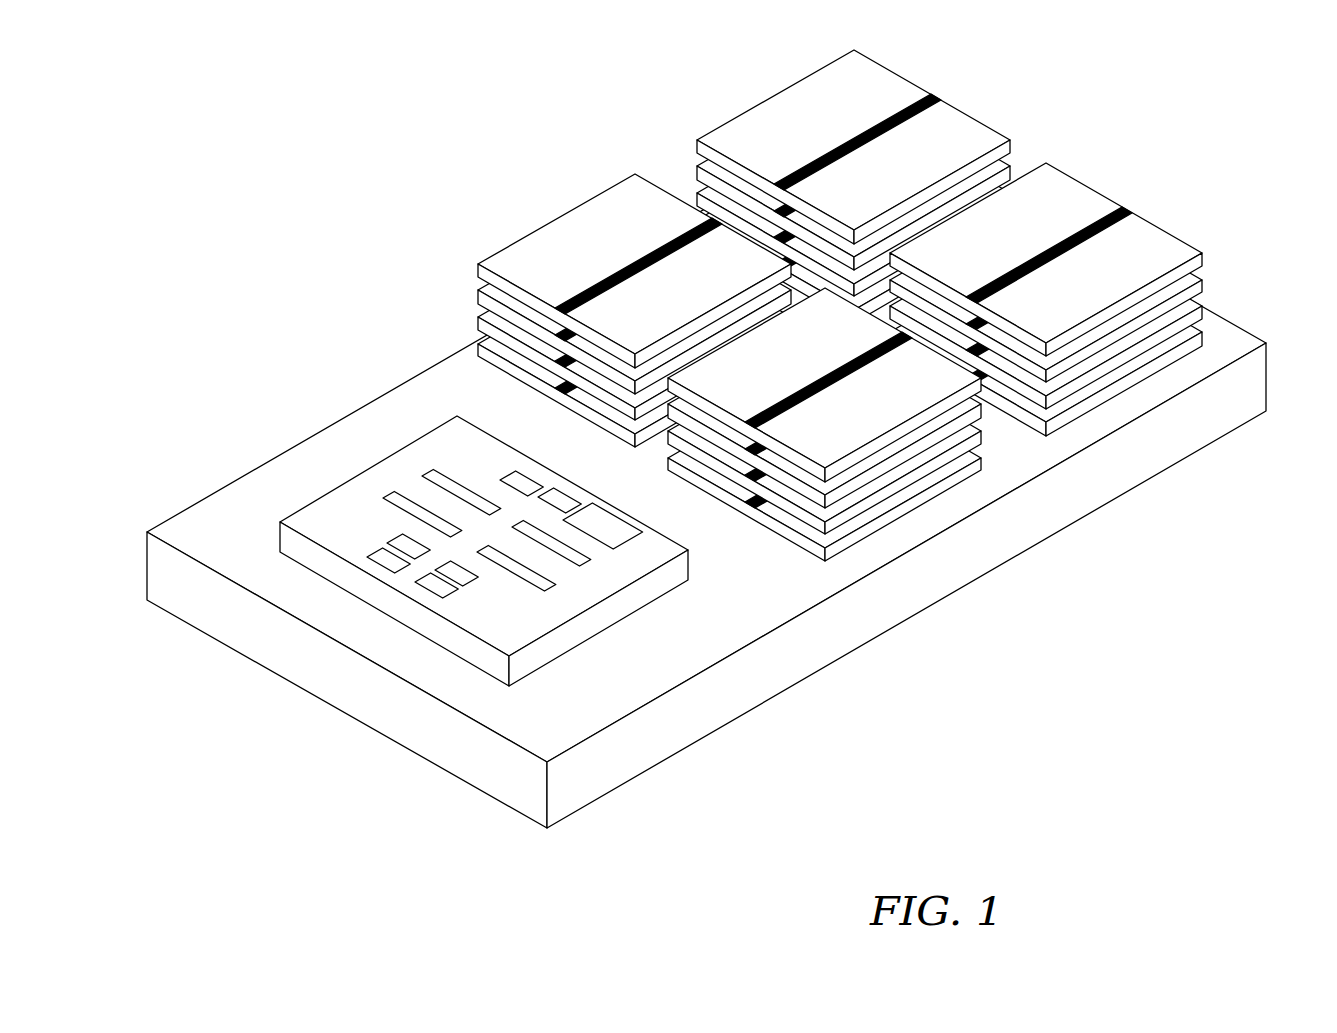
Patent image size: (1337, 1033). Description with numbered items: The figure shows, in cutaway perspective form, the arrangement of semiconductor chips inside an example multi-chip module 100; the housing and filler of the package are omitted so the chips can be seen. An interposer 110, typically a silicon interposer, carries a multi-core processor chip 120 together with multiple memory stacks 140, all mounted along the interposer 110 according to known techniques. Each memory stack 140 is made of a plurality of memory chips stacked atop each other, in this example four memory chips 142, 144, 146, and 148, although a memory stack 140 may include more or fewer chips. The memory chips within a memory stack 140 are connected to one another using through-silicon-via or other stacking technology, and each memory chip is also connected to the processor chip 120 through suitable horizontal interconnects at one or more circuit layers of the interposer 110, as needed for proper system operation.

The multi-chip module 100 is at (241, 344).
The interposer 110 is at (878, 620).
The multi-core processor chip 120 is at (277, 537).
The memory stack 140 is at (676, 164).
The memory chip 142 is at (478, 350).
The memory chip 144 is at (478, 323).
The memory chip 146 is at (478, 297).
The memory chip 148 is at (478, 270).